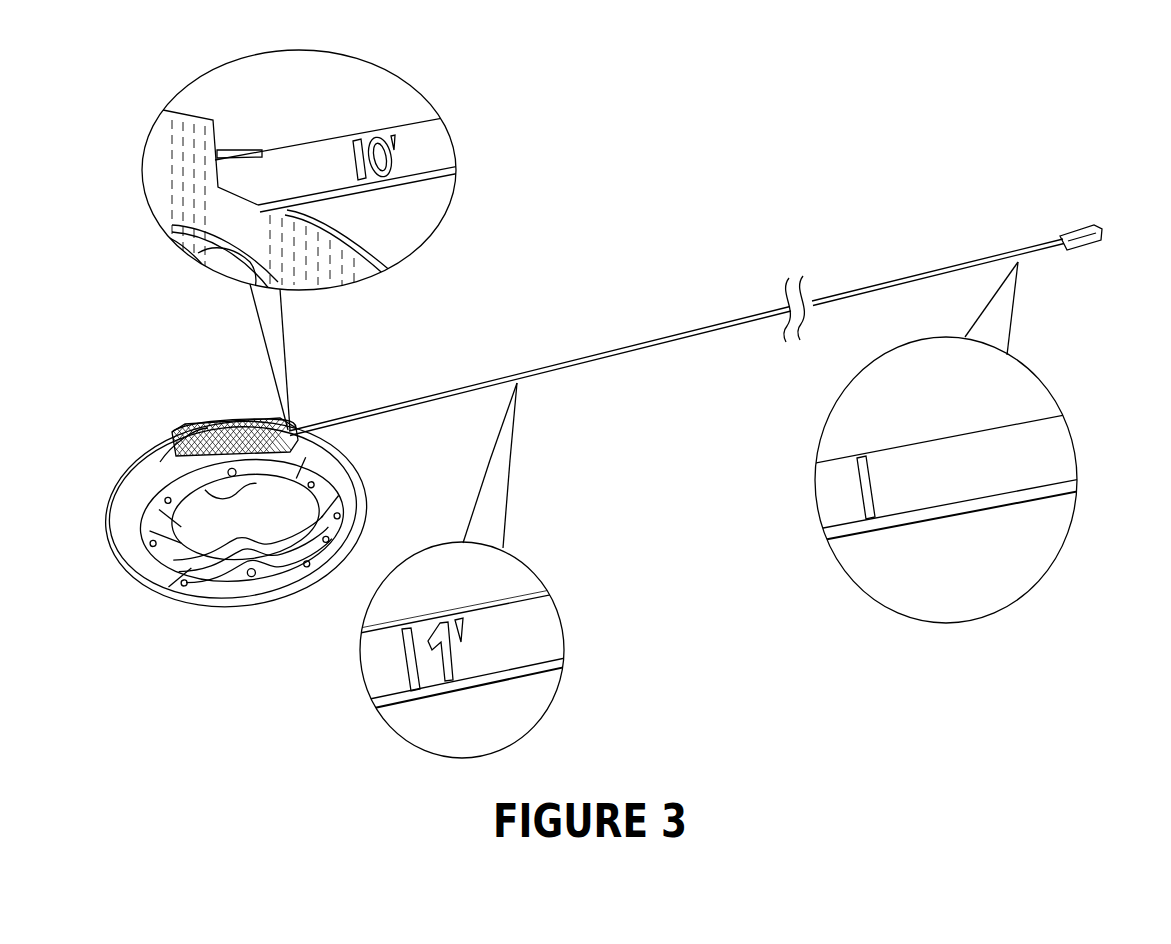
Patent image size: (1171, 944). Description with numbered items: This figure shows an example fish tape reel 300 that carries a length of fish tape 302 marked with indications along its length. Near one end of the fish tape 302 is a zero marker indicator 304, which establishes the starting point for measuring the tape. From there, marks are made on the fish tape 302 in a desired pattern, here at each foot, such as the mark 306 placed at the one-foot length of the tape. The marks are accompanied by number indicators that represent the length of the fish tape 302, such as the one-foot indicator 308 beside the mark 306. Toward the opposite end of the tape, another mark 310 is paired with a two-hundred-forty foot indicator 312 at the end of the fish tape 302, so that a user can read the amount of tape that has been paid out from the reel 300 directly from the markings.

The fish tape reel 300 is at (260, 590).
The fish tape 302 is at (563, 360).
The zero marker indicator 304 is at (357, 138).
The mark 306 is at (408, 627).
The one-foot indicator 308 is at (455, 618).
The mark 310 is at (861, 455).
The 240 foot indicator 312 is at (955, 440).